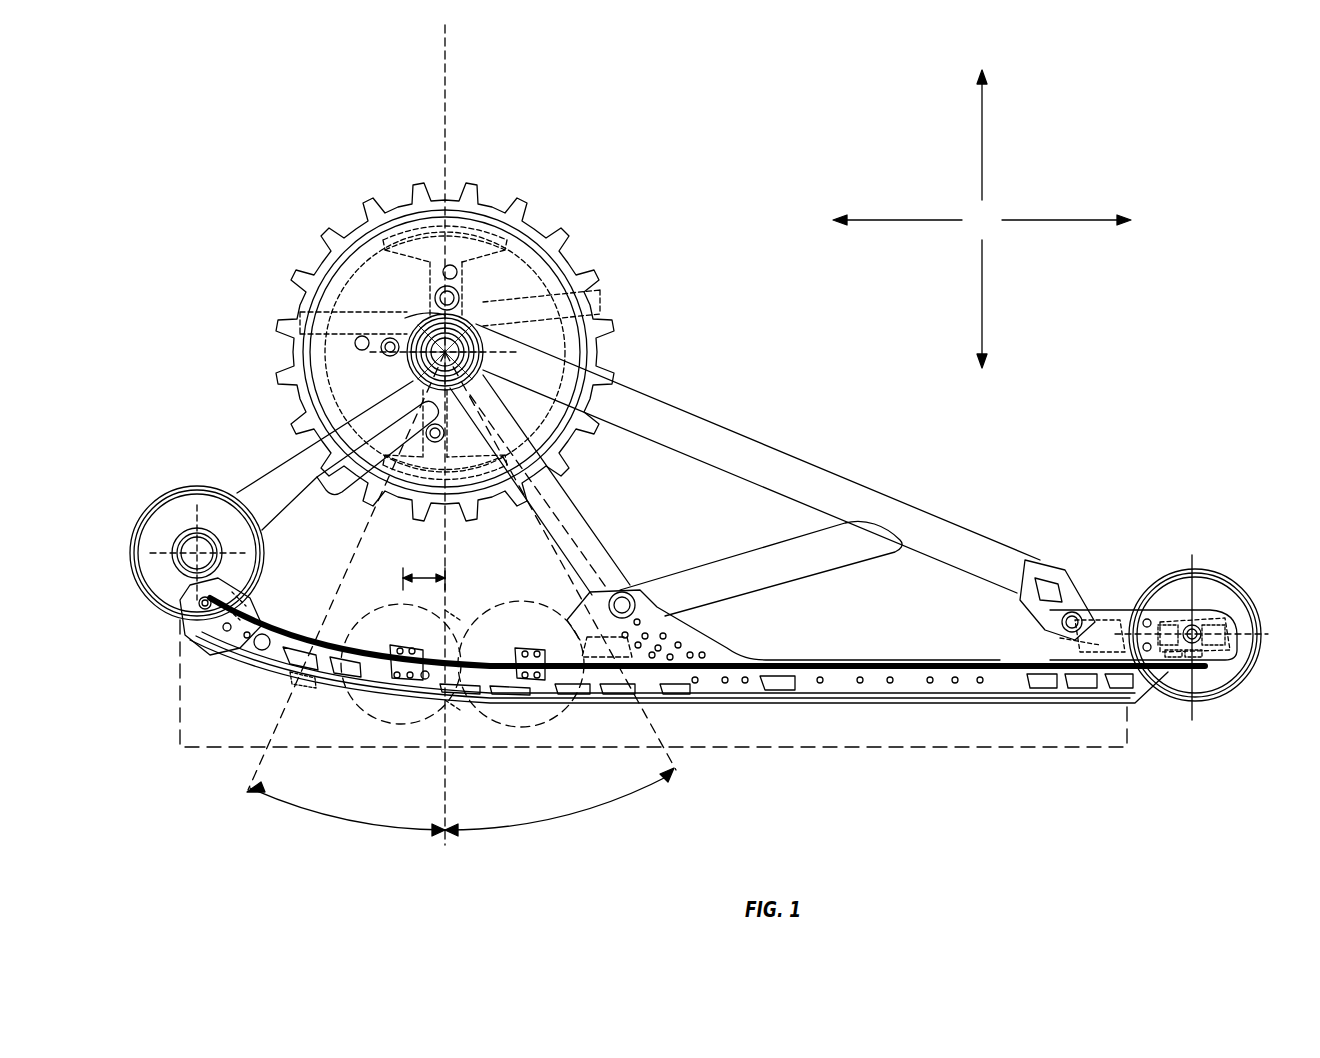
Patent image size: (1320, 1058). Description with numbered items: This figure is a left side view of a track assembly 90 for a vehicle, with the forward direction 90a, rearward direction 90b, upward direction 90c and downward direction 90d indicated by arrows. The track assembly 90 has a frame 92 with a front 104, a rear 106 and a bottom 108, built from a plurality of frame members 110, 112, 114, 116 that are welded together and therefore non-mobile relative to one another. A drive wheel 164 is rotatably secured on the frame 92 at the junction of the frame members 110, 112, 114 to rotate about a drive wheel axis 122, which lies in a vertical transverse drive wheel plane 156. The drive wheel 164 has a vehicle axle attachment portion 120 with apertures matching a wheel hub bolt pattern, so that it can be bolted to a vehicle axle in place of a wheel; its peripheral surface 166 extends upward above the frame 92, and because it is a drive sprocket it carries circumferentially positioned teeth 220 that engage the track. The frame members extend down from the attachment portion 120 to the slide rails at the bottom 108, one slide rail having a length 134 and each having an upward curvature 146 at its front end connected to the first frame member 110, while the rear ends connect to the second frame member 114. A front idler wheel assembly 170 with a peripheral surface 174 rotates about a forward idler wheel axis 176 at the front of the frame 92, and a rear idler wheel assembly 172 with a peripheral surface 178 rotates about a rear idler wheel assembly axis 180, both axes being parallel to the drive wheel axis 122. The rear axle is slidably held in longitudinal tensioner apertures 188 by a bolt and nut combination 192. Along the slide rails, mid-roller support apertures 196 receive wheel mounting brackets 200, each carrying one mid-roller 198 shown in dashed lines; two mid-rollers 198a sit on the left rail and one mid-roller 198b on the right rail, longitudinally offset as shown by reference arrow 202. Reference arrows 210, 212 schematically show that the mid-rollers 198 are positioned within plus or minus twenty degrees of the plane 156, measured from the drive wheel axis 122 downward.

The track assembly 90 is at (262, 108).
The forward direction 90a is at (868, 220).
The rearward direction 90b is at (1092, 220).
The upward direction 90c is at (982, 115).
The downward direction 90d is at (982, 310).
The frame 92 is at (632, 470).
The front 104 is at (156, 481).
The rear 106 is at (1151, 619).
The bottom 108 is at (708, 685).
The first frame member 110 is at (272, 478).
The frame member 112 is at (578, 535).
The second frame member 114 is at (812, 485).
The frame member 116 is at (745, 557).
The vehicle axle attachment portion 120 is at (485, 318).
The drive wheel axis 122 is at (420, 318).
The length 134 is at (945, 747).
The upward curvature 146 is at (245, 678).
The vertical transverse drive wheel plane 156 is at (447, 100).
The drive wheel 164 is at (335, 235).
The peripheral surface 166 is at (400, 202).
The front idler wheel assembly 170 is at (130, 553).
The rear idler wheel assembly 172 is at (1200, 710).
The peripheral surface 174 is at (197, 483).
The forward idler wheel axis 176 is at (342, 530).
The peripheral surface 178 is at (1175, 564).
The rear idler wheel assembly axis 180 is at (1210, 592).
The tensioner apertures 188 is at (1215, 650).
The bolt and nut combination 192 is at (1205, 628).
The mid-roller support apertures 196 is at (385, 672).
The mid-rollers 198 is at (593, 712).
The left side rail mid-rollers 198a is at (380, 620).
The right side rail mid-roller 198b is at (450, 615).
The wheel mounting brackets 200 is at (535, 692).
The reference arrow 202 is at (432, 576).
The reference arrow 210 is at (352, 822).
The reference arrow 212 is at (545, 822).
The teeth 220 is at (535, 208).